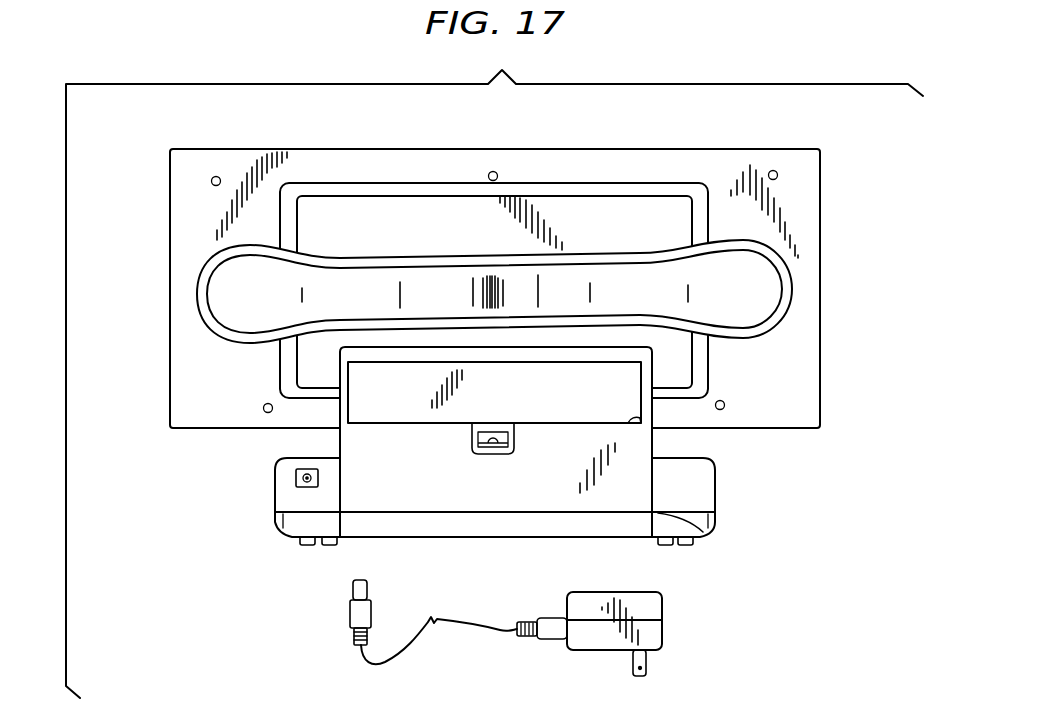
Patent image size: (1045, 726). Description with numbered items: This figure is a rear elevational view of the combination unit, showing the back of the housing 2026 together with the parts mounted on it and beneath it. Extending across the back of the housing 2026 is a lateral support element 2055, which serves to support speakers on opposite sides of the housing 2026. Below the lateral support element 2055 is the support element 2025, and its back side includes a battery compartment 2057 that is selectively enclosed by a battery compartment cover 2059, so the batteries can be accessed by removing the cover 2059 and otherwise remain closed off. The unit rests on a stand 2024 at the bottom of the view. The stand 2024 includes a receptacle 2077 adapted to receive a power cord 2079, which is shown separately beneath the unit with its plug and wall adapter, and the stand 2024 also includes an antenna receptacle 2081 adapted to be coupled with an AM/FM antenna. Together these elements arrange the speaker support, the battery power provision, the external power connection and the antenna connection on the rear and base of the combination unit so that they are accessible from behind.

The housing 2026 is at (583, 160).
The lateral support element 2055 is at (240, 292).
The support element 2025 is at (363, 443).
The battery compartment cover 2059 is at (567, 398).
The battery compartment 2057 is at (641, 423).
The stand 2024 is at (275, 507).
The receptacle 2077 is at (294, 478).
The antenna receptacle 2081 is at (703, 532).
The power cord 2079 is at (372, 610).